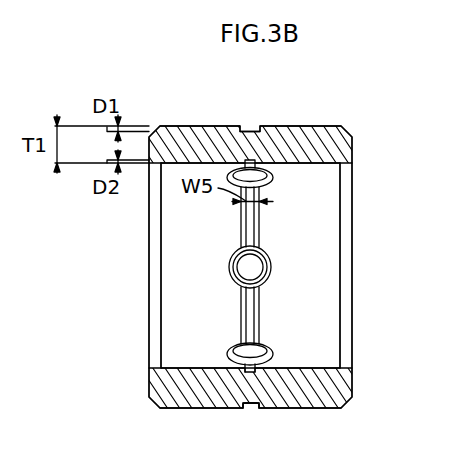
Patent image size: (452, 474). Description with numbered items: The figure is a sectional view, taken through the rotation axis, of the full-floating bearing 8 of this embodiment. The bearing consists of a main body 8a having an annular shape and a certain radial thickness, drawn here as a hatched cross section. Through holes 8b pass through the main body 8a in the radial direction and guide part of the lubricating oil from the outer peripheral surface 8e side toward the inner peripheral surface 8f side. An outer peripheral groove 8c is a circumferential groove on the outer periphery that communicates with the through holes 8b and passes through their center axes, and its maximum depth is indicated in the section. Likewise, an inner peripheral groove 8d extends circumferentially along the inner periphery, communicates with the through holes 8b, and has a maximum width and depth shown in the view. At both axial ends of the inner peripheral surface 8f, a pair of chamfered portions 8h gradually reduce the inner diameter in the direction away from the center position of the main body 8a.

The full-floating bearing 8 is at (379, 130).
The main body 8a is at (352, 297).
The through holes 8b is at (272, 268).
The outer peripheral groove 8c is at (250, 405).
The inner peripheral groove 8d is at (261, 219).
The outer peripheral surface 8e is at (313, 408).
The inner peripheral surface 8f is at (317, 185).
The chamfered portions 8h is at (343, 322).